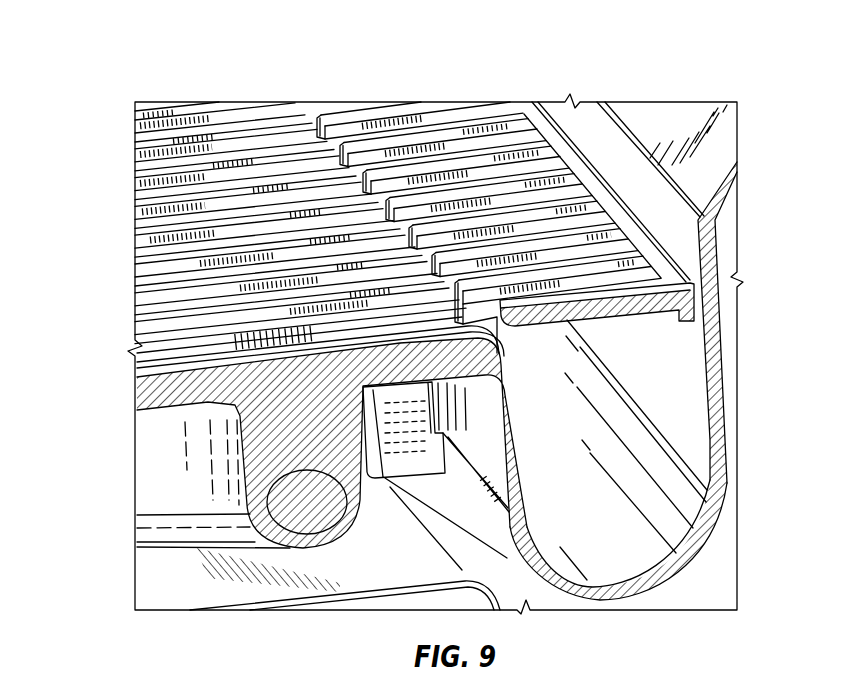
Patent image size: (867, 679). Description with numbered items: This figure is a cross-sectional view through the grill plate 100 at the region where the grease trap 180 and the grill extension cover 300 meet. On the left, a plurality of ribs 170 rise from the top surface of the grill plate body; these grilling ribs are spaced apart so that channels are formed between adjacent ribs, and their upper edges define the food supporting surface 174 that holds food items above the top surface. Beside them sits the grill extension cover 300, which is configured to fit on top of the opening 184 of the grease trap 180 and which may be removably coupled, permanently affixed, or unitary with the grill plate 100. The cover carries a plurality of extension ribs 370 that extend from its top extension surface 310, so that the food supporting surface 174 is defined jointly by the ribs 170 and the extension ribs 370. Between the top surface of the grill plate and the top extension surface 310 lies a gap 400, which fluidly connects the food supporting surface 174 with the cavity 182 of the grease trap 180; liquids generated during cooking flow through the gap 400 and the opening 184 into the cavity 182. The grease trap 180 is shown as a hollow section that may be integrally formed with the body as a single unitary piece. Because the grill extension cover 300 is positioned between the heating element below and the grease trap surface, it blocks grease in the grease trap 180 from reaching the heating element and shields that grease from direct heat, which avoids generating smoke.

The grill plate 100 is at (138, 62).
The ribs 170 is at (243, 133).
The food supporting surface 174 is at (160, 172).
The gap 400 is at (339, 140).
The extension ribs 370 is at (508, 130).
The grill extension cover 300 is at (600, 190).
The top extension surface 310 is at (672, 272).
The grease trap 180 is at (713, 367).
The cavity 182 is at (572, 478).
The opening 184 is at (490, 340).